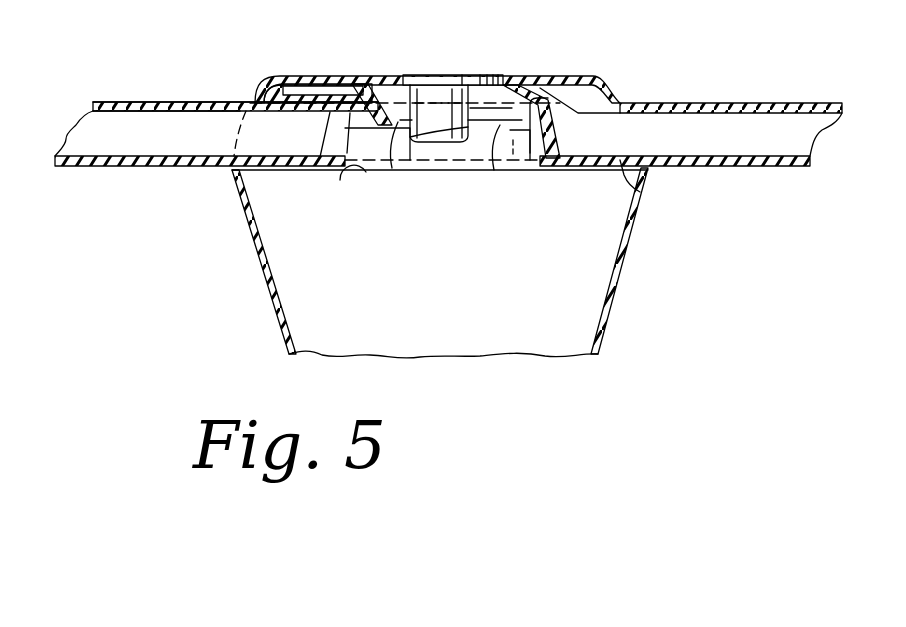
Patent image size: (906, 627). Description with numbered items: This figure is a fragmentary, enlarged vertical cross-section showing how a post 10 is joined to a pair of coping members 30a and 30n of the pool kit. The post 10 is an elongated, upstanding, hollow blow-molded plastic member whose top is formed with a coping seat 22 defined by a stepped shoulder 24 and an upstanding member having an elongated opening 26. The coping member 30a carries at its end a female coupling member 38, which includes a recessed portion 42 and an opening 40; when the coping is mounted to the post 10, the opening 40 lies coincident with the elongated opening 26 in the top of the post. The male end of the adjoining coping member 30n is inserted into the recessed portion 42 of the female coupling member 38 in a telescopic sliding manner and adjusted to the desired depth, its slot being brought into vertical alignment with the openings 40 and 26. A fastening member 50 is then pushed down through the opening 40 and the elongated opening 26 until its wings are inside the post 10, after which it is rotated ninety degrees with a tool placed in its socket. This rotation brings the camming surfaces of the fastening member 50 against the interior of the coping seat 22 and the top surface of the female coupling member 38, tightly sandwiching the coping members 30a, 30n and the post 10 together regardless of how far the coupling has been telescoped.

The post 10 is at (700, 283).
The coping seat 22 is at (552, 157).
The stepped shoulder 24 is at (354, 172).
The elongated opening 26 is at (392, 168).
The coping member 30n is at (145, 99).
The coping member 30a is at (724, 101).
The female coupling member 38 is at (555, 74).
The opening 40 is at (374, 86).
The recessed portion 42 is at (292, 104).
The fastening member 50 is at (452, 73).